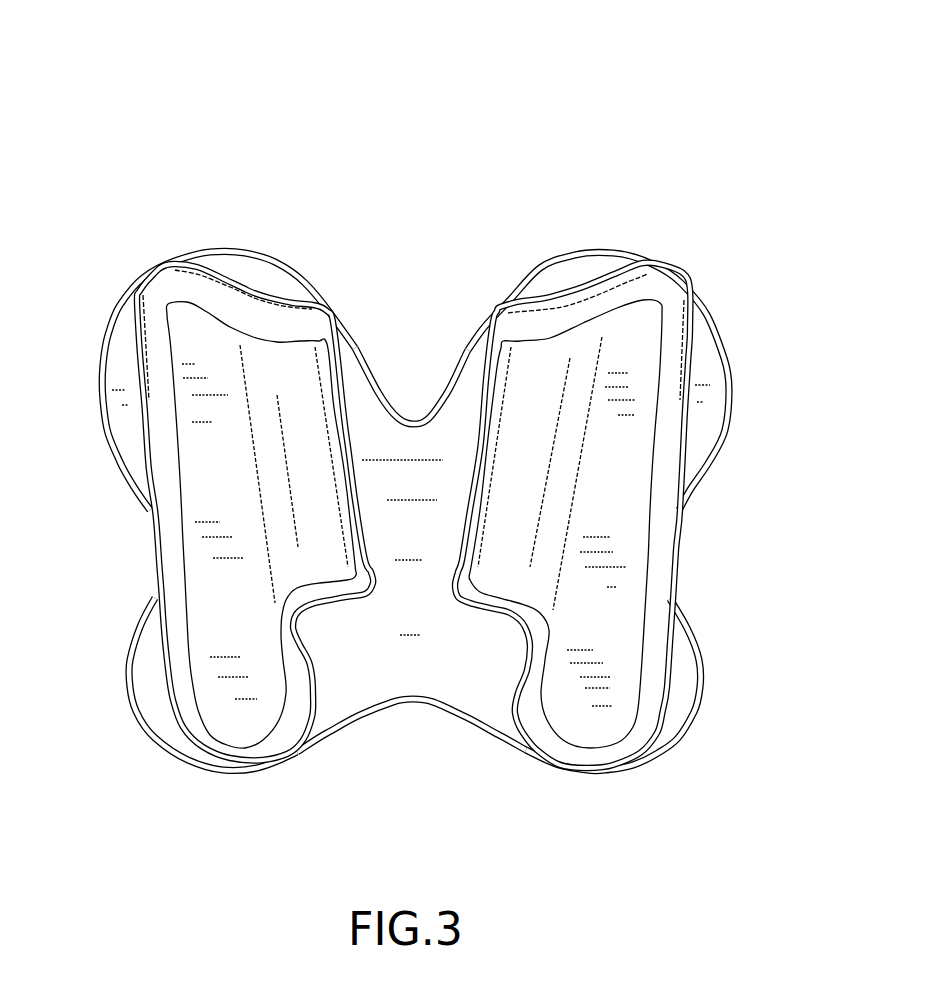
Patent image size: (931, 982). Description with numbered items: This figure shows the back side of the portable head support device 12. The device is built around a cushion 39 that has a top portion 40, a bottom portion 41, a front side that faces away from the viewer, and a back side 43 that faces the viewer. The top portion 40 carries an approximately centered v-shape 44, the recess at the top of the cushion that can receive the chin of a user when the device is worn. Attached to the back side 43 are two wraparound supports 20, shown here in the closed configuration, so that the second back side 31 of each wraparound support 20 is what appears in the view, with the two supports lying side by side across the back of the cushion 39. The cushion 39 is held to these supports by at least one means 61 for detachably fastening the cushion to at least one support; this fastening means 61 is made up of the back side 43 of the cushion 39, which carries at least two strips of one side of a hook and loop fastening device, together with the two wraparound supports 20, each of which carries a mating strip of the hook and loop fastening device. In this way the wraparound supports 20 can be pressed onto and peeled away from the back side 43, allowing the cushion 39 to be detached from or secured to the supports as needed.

The portable head support device 12 is at (208, 118).
The wraparound supports 20 is at (413, 515).
The means for detachably fastening the cushion to at least one support 61 is at (152, 538).
The second back side 31 is at (308, 513).
The cushion 39 is at (128, 708).
The top portion 40 is at (611, 249).
The bottom portion 41 is at (687, 740).
The back side 43 is at (425, 665).
The v-shape 44 is at (412, 422).